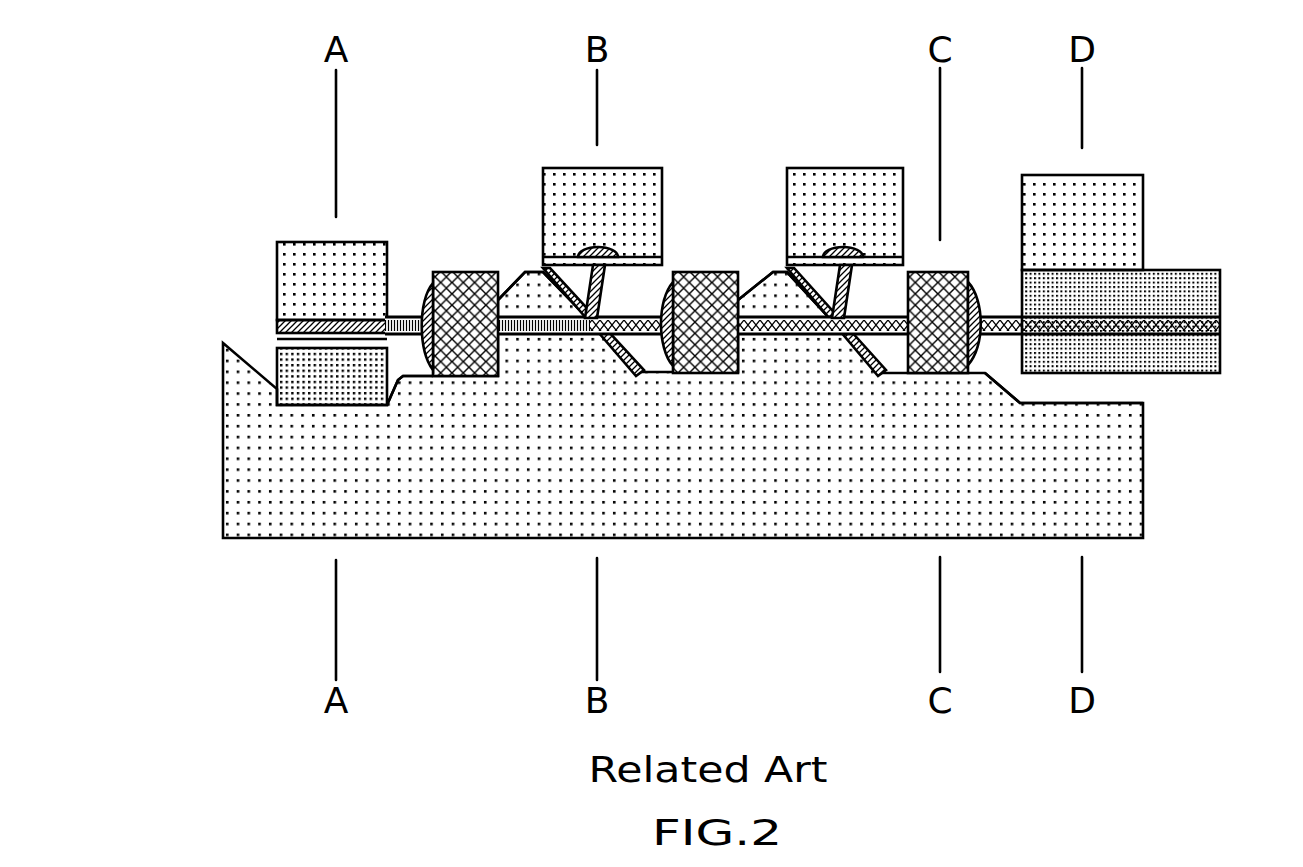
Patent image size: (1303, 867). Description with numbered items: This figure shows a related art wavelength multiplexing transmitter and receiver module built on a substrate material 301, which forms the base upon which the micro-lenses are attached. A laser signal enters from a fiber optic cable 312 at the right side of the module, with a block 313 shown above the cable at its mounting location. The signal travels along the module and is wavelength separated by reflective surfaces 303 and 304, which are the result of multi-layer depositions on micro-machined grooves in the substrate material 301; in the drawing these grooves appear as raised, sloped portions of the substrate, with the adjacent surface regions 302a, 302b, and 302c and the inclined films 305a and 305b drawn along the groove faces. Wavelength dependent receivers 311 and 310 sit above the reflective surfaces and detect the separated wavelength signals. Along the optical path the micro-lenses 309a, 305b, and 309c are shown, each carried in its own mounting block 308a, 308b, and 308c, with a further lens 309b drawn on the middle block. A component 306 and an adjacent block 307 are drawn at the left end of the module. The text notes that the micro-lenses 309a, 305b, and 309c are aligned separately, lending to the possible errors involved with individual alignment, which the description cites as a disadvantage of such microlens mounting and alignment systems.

The substrate material 301 is at (455, 467).
The substrate step portion 302a is at (393, 378).
The substrate protrusion 302b is at (640, 352).
The substrate shelf portion 302c is at (1062, 388).
The reflective surface 303 is at (850, 358).
The reflective surface 304 is at (603, 343).
The inclined reflective film 305a is at (508, 363).
The micro-lens 305b is at (760, 292).
The laser diode 306 is at (270, 380).
The laser diode mount block 307 is at (293, 273).
The lens holder 308a is at (472, 272).
The lens holder 308b is at (707, 357).
The lens holder 308c is at (935, 362).
The micro-lens 309a is at (423, 293).
The lens 309b is at (660, 353).
The micro-lens 309c is at (985, 270).
The wavelength dependent receiver 310 is at (628, 183).
The wavelength dependent receiver 311 is at (845, 187).
The fiber optic cable 312 is at (1195, 290).
The ferrule holder 313 is at (1065, 190).